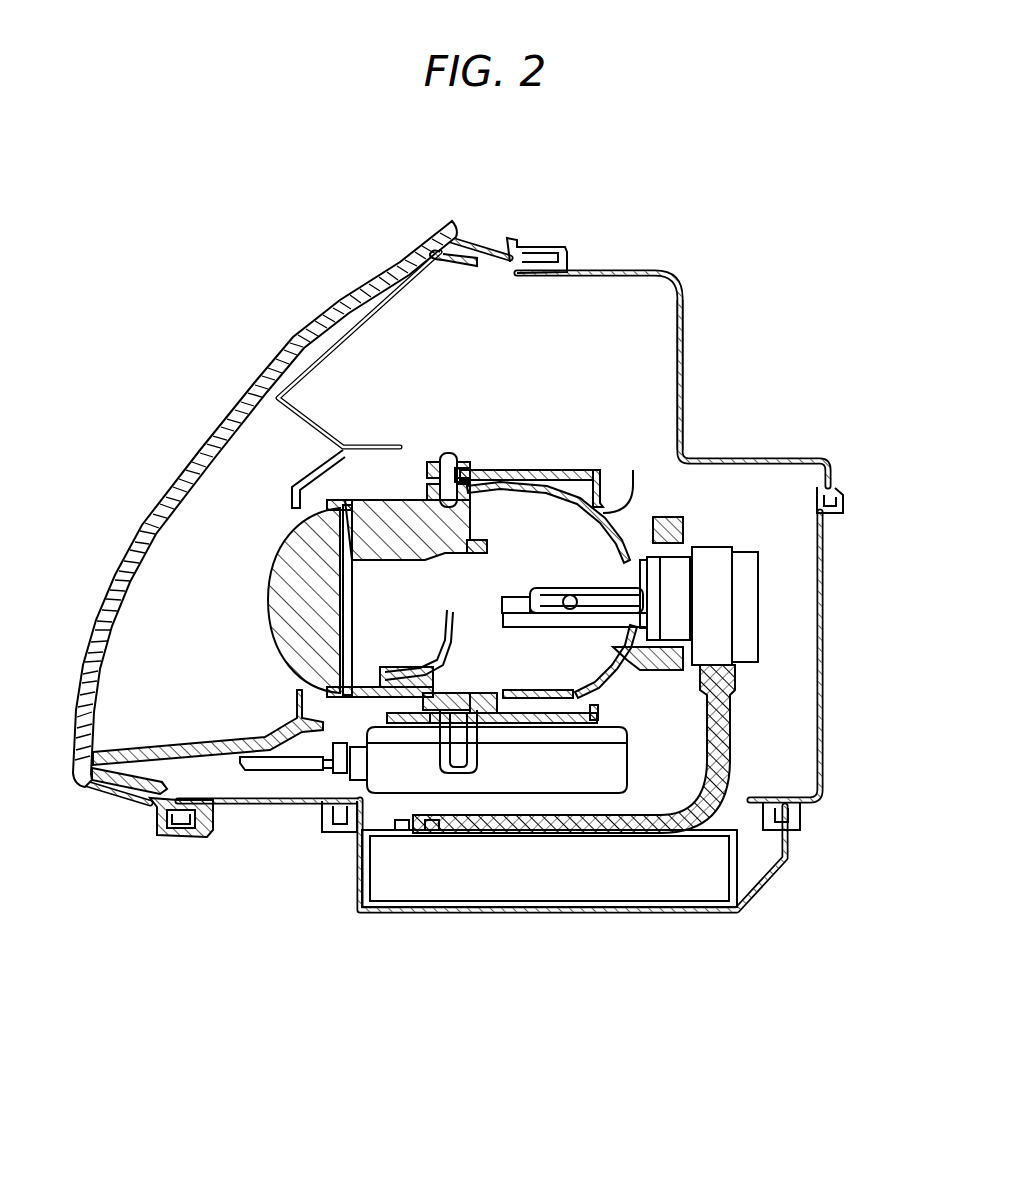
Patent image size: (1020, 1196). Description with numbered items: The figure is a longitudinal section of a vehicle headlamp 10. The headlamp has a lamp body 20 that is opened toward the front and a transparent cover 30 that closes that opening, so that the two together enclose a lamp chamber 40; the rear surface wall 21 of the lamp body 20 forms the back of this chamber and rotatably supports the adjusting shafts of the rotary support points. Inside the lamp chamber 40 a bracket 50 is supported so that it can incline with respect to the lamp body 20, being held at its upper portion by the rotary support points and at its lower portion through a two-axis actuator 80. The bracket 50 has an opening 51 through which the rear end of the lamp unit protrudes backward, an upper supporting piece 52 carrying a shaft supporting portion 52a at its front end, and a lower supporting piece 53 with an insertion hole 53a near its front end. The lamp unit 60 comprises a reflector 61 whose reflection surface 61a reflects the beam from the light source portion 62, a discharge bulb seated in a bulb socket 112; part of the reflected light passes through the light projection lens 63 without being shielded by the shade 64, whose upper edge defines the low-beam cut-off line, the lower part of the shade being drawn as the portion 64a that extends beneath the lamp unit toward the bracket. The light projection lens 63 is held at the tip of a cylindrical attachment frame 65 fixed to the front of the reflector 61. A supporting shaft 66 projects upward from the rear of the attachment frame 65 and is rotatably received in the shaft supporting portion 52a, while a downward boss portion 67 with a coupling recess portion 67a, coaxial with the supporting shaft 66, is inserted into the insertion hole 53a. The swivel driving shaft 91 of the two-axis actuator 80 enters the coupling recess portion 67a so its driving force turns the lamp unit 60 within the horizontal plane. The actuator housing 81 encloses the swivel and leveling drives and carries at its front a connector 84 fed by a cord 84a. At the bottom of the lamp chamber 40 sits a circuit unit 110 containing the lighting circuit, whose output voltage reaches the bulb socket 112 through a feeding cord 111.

The vehicle headlamp 10 is at (292, 294).
The lamp body 20 is at (668, 278).
The rear surface wall 21 is at (688, 358).
The transparent cover 30 is at (205, 445).
The lamp chamber 40 is at (452, 300).
The bracket 50 is at (583, 470).
The opening 51 is at (620, 513).
The upper supporting piece 52 is at (523, 458).
The shaft supporting portion 52a is at (463, 457).
The lower supporting piece 53 is at (580, 707).
The insertion hole 53a is at (430, 733).
The lamp unit 60 is at (255, 560).
The reflector 61 is at (620, 520).
The reflection surface 61a is at (523, 513).
The light source portion 62 is at (547, 600).
The light projection lens 63 is at (270, 622).
The shade 64 is at (345, 640).
The lower arm of lens holder 64a is at (457, 633).
The attachment frame 65 is at (385, 500).
The supporting shaft 66 is at (445, 455).
The boss portion 67 is at (295, 703).
The coupling recess portion 67a is at (463, 772).
The two-axis actuator 80 is at (620, 757).
The housing 81 is at (620, 777).
The connector 84 is at (317, 800).
The cord 84a is at (270, 762).
The swivel driving shaft 91 is at (433, 700).
The circuit unit 110 is at (658, 877).
The feeding cord 111 is at (725, 712).
The bulb socket 112 is at (748, 590).